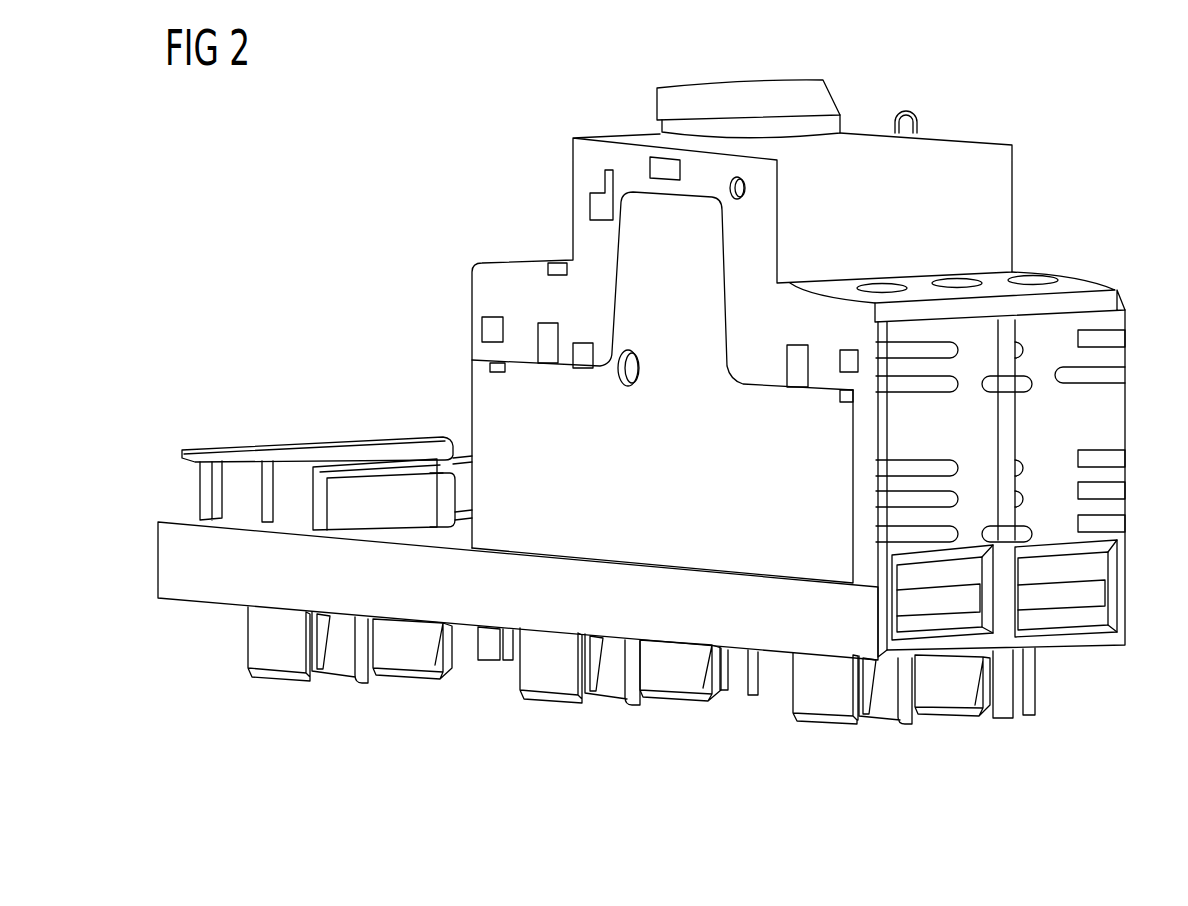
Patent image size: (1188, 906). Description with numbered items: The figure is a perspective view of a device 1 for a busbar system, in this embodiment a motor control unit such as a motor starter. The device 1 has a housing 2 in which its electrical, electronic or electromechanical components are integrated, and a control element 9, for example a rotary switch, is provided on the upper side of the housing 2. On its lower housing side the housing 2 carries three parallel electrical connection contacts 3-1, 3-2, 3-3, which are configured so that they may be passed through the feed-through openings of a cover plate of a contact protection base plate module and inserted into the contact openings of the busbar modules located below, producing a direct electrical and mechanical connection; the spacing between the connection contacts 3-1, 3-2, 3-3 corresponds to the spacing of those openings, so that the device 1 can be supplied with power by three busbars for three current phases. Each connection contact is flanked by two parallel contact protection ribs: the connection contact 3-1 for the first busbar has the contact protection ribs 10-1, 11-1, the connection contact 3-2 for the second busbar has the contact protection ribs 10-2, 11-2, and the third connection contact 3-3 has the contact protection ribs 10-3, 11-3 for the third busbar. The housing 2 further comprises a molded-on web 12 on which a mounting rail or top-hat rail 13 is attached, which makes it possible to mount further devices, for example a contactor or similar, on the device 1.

The device 1 is at (1114, 106).
The housing 2 is at (1005, 207).
The control element 9 is at (750, 92).
The molded-on web 12 is at (193, 588).
The top-hat rail 13 is at (260, 455).
The contact protection rib 11-1 is at (818, 712).
The contact protection rib 11-2 is at (545, 687).
The contact protection rib 11-3 is at (272, 662).
The electrical connection contact 3-1 is at (877, 722).
The electrical connection contact 3-2 is at (598, 690).
The electrical connection contact 3-3 is at (327, 667).
The contact protection rib 10-1 is at (910, 720).
The contact protection rib 10-2 is at (637, 697).
The contact protection rib 10-3 is at (363, 668).